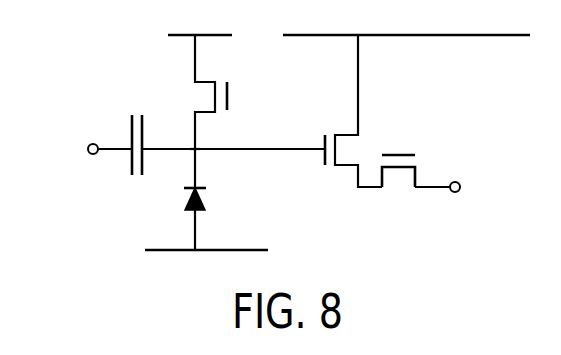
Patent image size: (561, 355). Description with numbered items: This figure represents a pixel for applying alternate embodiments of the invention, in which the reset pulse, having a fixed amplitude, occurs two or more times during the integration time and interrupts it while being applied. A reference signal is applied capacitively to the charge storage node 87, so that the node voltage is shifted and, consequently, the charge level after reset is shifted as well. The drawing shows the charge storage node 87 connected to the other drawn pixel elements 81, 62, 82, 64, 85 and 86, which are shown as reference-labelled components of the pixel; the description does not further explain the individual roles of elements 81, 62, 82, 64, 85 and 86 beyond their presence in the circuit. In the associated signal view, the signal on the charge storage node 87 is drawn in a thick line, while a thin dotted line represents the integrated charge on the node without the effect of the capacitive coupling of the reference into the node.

The transistor 81 is at (236, 92).
The charge storage node 87 is at (213, 138).
The reference input capacitor 62 is at (81, 162).
The diode 82 is at (220, 199).
The transistor 64 is at (327, 111).
The capacitor 85 is at (400, 155).
The output terminal 86 is at (451, 206).